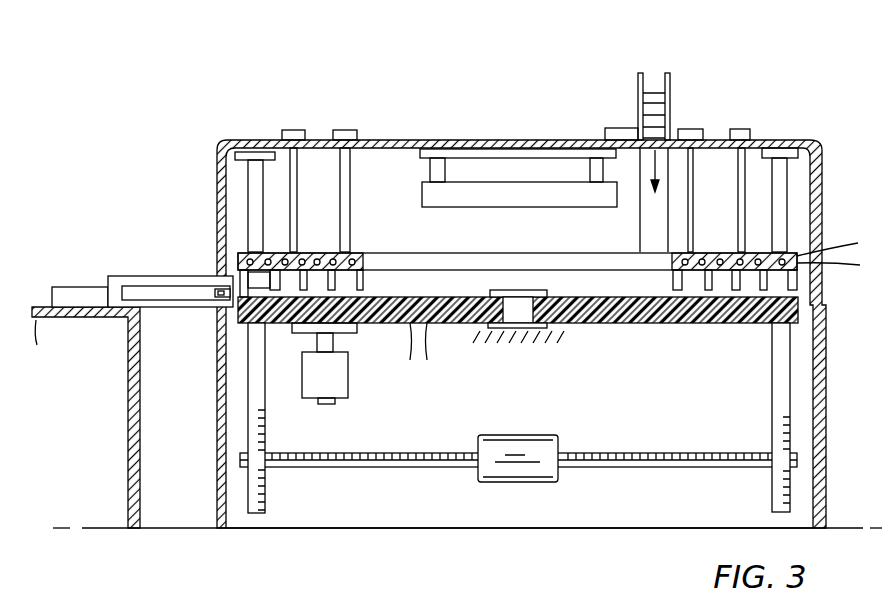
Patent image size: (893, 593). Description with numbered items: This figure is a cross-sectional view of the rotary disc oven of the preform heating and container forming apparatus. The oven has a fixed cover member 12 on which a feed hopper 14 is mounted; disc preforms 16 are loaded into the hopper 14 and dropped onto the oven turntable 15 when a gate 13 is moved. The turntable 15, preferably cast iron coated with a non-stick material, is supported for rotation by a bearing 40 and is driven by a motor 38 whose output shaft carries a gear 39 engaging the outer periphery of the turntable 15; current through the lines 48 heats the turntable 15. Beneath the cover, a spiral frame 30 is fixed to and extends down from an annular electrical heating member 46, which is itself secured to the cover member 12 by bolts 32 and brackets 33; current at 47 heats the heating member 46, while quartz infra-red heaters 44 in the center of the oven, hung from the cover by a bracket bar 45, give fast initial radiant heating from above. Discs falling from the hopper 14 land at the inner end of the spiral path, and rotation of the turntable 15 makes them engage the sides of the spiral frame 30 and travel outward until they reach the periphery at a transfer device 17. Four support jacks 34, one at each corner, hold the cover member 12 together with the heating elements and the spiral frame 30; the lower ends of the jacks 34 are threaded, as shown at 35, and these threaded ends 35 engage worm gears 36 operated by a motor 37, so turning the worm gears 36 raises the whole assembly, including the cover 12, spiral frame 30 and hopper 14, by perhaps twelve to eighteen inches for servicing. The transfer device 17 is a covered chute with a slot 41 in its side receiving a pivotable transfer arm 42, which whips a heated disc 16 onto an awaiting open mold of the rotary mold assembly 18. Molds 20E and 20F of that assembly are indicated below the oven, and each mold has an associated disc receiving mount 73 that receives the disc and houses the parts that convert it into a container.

The cover member 12 is at (820, 162).
The gate 13 is at (613, 127).
The feed hopper 14 is at (668, 125).
The oven turntable 15 is at (685, 323).
The disc preforms 16 is at (672, 78).
The transfer device 17 is at (110, 282).
The rotary mold assembly 18 is at (128, 353).
The spiral frame 30 is at (378, 282).
The bolts 32 is at (298, 130).
The brackets 33 is at (340, 210).
The support jacks 34 is at (248, 186).
The threaded lower ends 35 is at (267, 500).
The worm gears 36 is at (337, 453).
The motor 37 is at (537, 443).
The motor 38 is at (340, 387).
The gear 39 is at (357, 333).
The bearing 40 is at (522, 317).
The slot 41 is at (160, 293).
The transfer arm 42 is at (217, 297).
The quartz infra-red heaters 44 is at (567, 200).
The bracket bar 45 is at (462, 160).
The annular electrical heating member 46 is at (278, 253).
The current 47 is at (842, 265).
The lines 48 is at (430, 353).
The disc receiving mount 73 is at (77, 298).
The mold 20E is at (312, 578).
The mold 20F is at (566, 578).